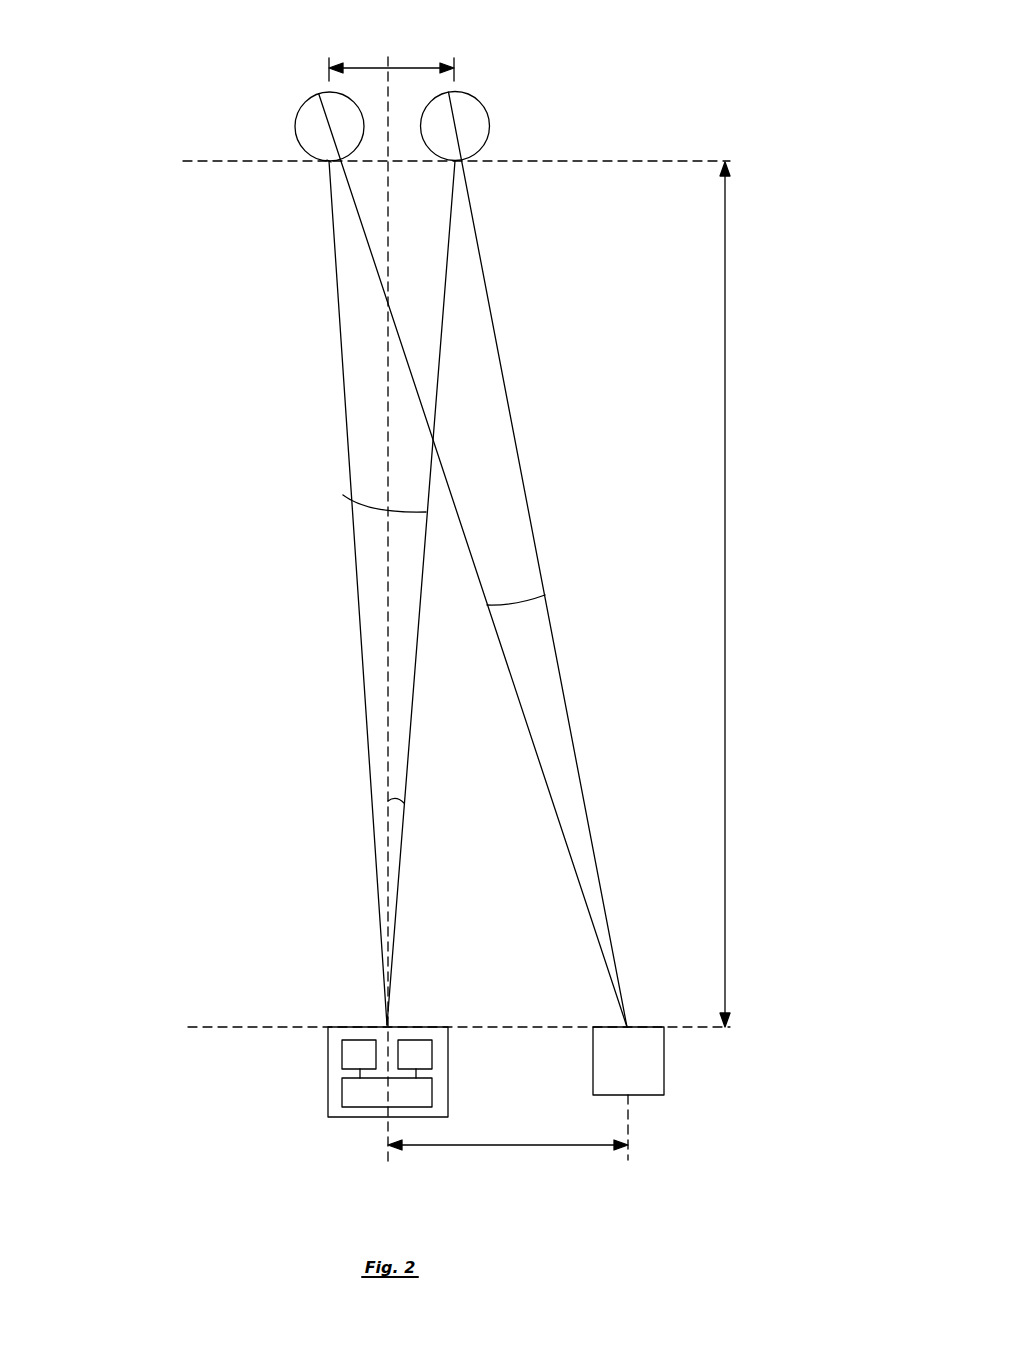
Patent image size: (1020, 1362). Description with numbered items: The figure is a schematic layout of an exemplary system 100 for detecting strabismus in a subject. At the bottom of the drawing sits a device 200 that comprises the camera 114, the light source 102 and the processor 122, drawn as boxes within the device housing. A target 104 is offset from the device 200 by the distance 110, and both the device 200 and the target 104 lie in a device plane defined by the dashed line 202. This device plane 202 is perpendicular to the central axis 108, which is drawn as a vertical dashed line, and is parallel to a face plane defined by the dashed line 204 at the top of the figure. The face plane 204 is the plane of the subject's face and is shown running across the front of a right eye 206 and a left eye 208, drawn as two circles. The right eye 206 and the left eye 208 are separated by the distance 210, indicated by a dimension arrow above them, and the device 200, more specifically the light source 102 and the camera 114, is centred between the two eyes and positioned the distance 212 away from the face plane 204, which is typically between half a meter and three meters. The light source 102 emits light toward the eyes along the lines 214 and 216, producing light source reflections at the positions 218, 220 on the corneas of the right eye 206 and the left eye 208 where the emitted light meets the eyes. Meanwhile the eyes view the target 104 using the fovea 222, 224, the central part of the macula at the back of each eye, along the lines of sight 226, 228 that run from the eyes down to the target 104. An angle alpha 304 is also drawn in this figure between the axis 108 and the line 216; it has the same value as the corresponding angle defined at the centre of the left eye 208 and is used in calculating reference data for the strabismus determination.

The system for detecting strabismus 100 is at (272, 1010).
The light source 102 is at (410, 1050).
The target 104 is at (641, 1042).
The axis 108 is at (390, 597).
The distance between device and target 110 is at (528, 1145).
The camera 114 is at (342, 1057).
The processor 122 is at (350, 1102).
The device 200 is at (358, 1025).
The device plane 202 is at (488, 1027).
The face plane 204 is at (205, 161).
The right eye 206 is at (296, 128).
The left eye 208 is at (490, 128).
The distance between the eyes 210 is at (405, 68).
The distance between device and face plane 212 is at (725, 428).
The line of emitted light to right eye 214 is at (345, 425).
The line of emitted light to left eye 216 is at (343, 495).
The light source reflection position on right eye 218 is at (327, 163).
The light source reflection position on left eye 220 is at (457, 165).
The fovea of right eye 222 is at (306, 80).
The fovea of left eye 224 is at (466, 83).
The line of sight of right eye 226 is at (545, 595).
The line of sight of left eye 228 is at (530, 509).
The angle alpha 304 is at (400, 836).